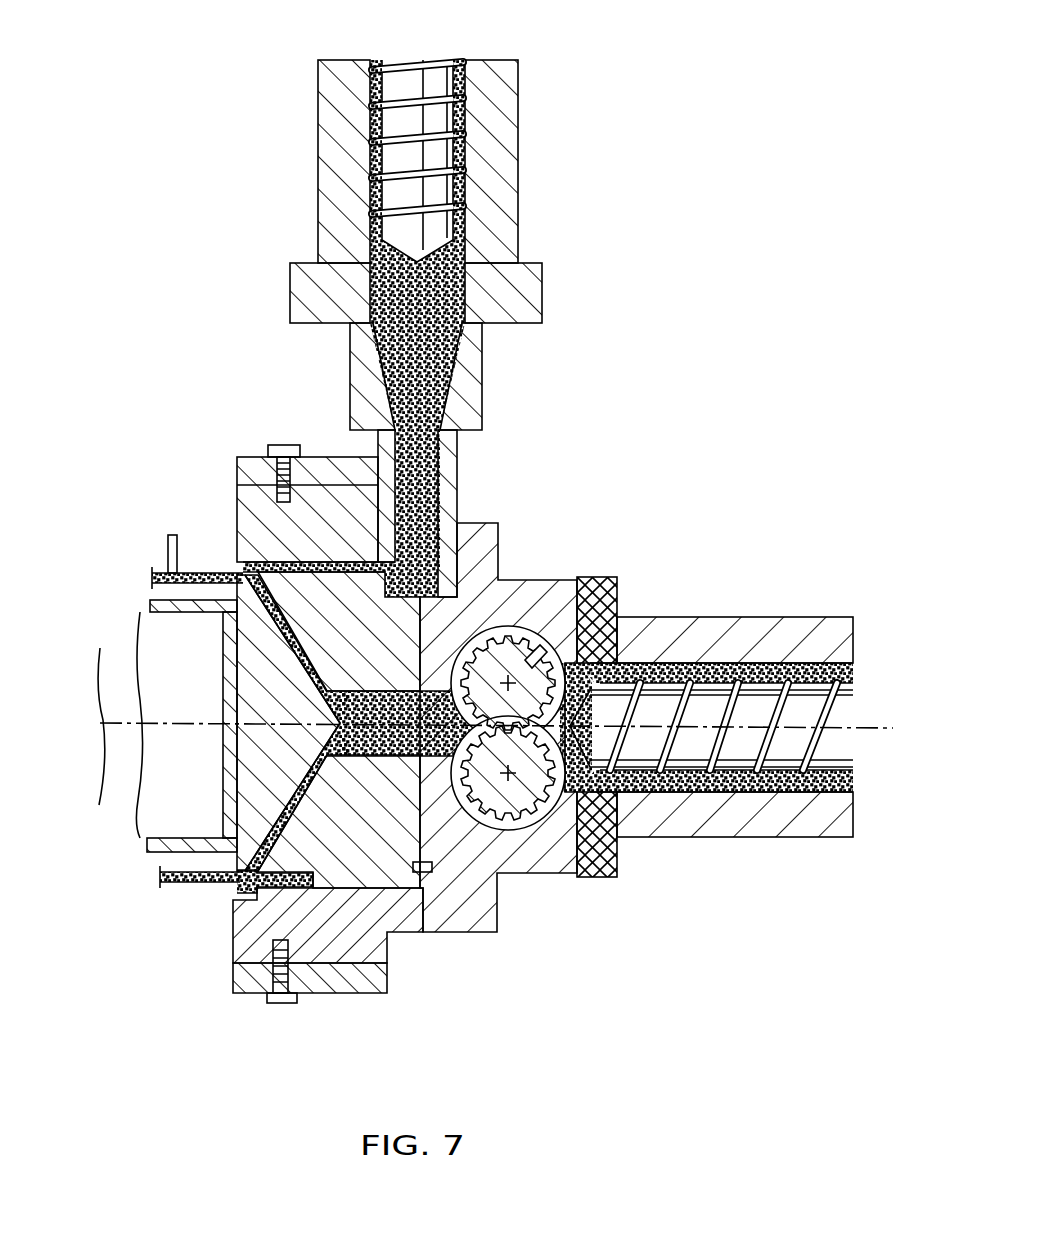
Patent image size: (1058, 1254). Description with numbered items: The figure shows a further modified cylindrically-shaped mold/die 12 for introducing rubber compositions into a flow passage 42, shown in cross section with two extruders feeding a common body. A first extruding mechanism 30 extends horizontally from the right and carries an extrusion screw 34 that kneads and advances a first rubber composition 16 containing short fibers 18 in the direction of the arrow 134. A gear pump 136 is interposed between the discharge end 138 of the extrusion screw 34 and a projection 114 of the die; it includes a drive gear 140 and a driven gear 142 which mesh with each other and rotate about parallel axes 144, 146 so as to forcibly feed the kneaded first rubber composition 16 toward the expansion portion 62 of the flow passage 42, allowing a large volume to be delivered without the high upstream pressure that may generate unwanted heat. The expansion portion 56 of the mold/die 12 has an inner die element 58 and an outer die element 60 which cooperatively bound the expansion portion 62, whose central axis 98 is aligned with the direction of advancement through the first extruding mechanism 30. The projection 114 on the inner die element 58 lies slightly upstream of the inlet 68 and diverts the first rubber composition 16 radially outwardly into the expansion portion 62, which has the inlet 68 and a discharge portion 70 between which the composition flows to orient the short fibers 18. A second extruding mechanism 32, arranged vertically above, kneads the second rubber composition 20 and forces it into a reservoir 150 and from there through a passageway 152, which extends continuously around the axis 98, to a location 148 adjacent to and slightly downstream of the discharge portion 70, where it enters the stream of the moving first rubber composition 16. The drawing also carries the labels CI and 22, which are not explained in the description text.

The second extruding mechanism 32 is at (527, 186).
The second rubber composition 20 is at (433, 405).
The cylindrically-shaped mold/die 12 is at (604, 426).
The outer die element 60 is at (331, 605).
The clearance CI is at (262, 540).
The passageway 152 is at (343, 695).
The projection 114 is at (415, 575).
The reservoir 150 is at (388, 566).
The drive gear 140 is at (578, 690).
The axis of drive gear 144 is at (532, 650).
The gear pump 136 is at (622, 650).
The extrusion screw 34 is at (758, 708).
The first extruding mechanism 30 is at (809, 617).
The arrow 134 is at (838, 707).
The first rubber composition 16 is at (830, 790).
The plate 22 is at (168, 552).
The discharge portion 70 is at (236, 590).
The expansion portion of the mold/die 56 is at (121, 658).
The central axis 98 is at (100, 690).
The location 148 is at (217, 597).
The expansion portion of the flow passage 62 is at (317, 603).
The flow passage 42 is at (223, 723).
The inner die element 58 is at (280, 797).
The inlet 68 is at (355, 772).
The short fibers 18 is at (432, 745).
The axis of driven gear 146 is at (498, 800).
The driven gear 142 is at (520, 810).
The discharge end 138 is at (540, 810).